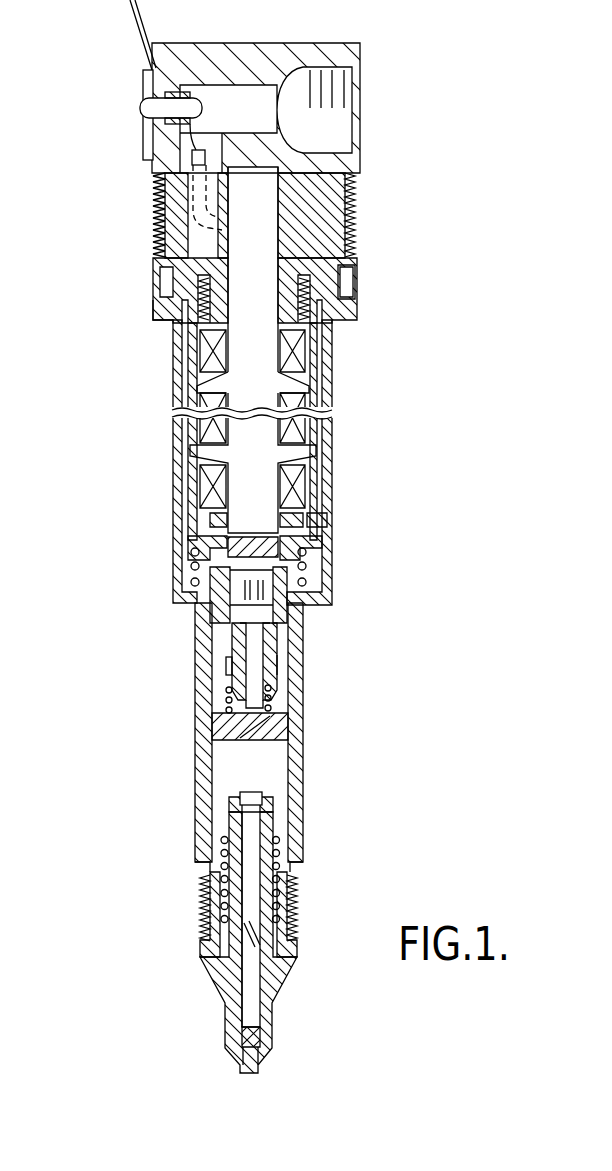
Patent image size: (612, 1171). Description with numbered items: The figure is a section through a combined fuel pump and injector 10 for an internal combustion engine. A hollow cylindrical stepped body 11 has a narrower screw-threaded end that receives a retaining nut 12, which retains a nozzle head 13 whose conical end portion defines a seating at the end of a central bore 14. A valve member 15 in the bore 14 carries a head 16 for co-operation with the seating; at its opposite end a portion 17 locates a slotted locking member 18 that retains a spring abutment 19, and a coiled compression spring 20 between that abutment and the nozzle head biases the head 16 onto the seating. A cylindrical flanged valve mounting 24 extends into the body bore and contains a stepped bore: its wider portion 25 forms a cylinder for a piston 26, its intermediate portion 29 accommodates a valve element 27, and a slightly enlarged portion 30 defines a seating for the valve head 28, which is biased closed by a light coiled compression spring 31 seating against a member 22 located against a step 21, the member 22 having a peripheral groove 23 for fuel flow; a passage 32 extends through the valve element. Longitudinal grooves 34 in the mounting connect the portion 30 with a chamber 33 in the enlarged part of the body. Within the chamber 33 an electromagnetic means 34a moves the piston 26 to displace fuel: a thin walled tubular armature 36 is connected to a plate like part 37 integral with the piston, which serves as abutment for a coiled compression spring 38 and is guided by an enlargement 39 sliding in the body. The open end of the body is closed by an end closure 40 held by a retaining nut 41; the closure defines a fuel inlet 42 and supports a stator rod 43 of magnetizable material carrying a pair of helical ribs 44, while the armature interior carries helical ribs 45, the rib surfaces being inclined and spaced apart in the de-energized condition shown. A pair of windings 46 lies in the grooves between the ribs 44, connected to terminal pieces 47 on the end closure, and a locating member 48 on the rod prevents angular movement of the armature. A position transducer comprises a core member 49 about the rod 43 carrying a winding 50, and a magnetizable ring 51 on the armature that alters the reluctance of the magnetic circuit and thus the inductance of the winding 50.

The combined fuel pump and injector 10 is at (173, 487).
The hollow cylindrical stepped body 11 is at (195, 855).
The retaining nut 12 is at (277, 975).
The nozzle head 13 is at (263, 1020).
The bore 14 is at (247, 1005).
The valve member 15 is at (250, 973).
The head 16 is at (250, 1067).
The portion 17 is at (252, 799).
The locking member 18 is at (235, 812).
The spring abutment 19 is at (230, 830).
The coiled compression spring 20 is at (278, 900).
The step 21 is at (217, 730).
The member 22 is at (290, 732).
The peripheral groove 23 is at (270, 730).
The cylindrical flanged valve mounting 24 is at (230, 650).
The wider portion of the bore 25 is at (243, 593).
The piston 26 is at (270, 584).
The valve element 27 is at (275, 663).
The valve head 28 is at (267, 683).
The intermediate portion of the bore 29 is at (230, 665).
The enlarged portion of the bore 30 is at (268, 668).
The light coiled compression spring 31 is at (230, 707).
The passage 32 is at (250, 632).
The chamber 33 is at (187, 553).
The longitudinal grooves 34 is at (213, 633).
The electromagnetic means 34a is at (173, 457).
The thin walled armature 36 is at (190, 348).
The plate like part 37 is at (313, 541).
The coiled compression spring 38 is at (192, 567).
The enlargement 39 is at (325, 273).
The end closure 40 is at (192, 243).
The retaining nut 41 is at (163, 313).
The fuel inlet 42 is at (330, 125).
The rod 43 is at (257, 431).
The helical ribs 44 is at (287, 383).
The helical ribs 45 is at (192, 373).
The windings 46 is at (297, 482).
The terminal pieces 47 is at (135, 32).
The locating member 48 is at (323, 519).
The core member 49 is at (313, 327).
The winding 50 is at (323, 305).
The ring 51 is at (183, 270).